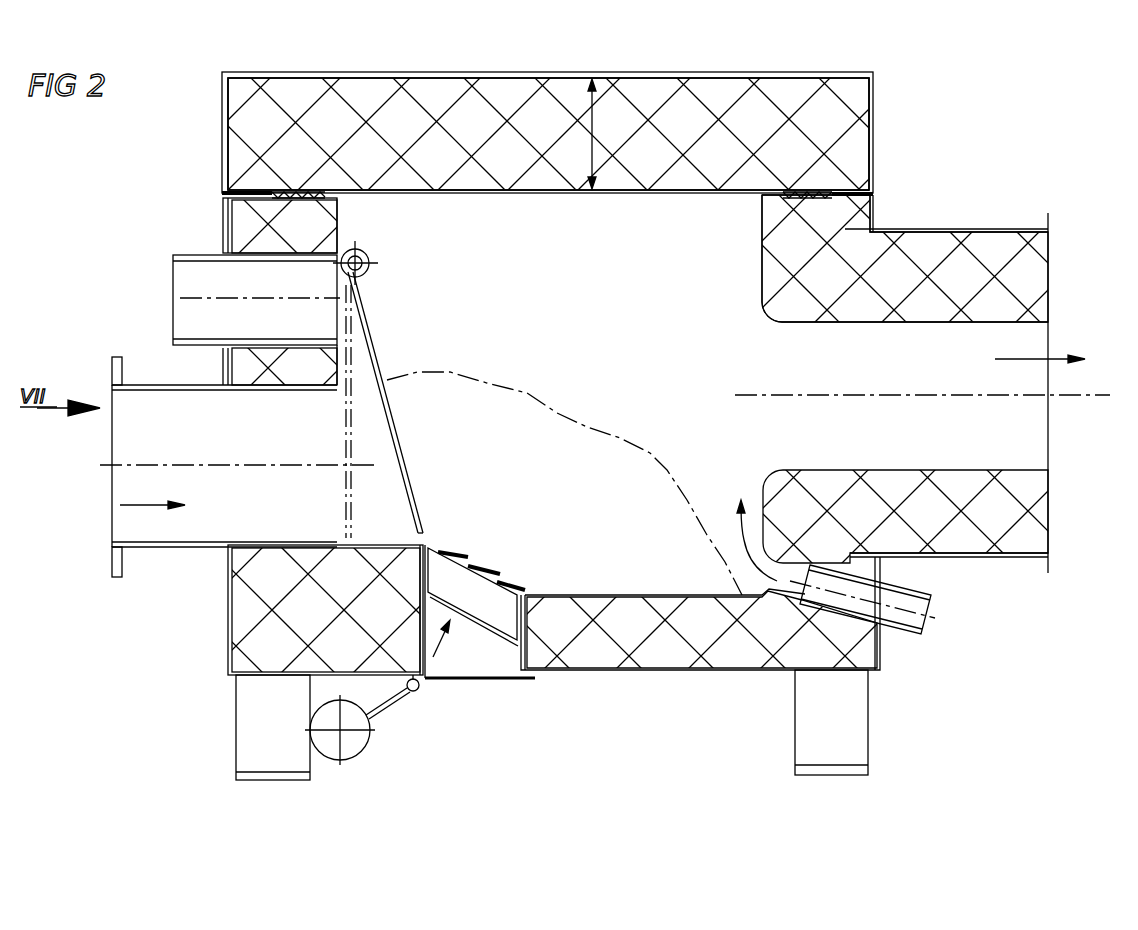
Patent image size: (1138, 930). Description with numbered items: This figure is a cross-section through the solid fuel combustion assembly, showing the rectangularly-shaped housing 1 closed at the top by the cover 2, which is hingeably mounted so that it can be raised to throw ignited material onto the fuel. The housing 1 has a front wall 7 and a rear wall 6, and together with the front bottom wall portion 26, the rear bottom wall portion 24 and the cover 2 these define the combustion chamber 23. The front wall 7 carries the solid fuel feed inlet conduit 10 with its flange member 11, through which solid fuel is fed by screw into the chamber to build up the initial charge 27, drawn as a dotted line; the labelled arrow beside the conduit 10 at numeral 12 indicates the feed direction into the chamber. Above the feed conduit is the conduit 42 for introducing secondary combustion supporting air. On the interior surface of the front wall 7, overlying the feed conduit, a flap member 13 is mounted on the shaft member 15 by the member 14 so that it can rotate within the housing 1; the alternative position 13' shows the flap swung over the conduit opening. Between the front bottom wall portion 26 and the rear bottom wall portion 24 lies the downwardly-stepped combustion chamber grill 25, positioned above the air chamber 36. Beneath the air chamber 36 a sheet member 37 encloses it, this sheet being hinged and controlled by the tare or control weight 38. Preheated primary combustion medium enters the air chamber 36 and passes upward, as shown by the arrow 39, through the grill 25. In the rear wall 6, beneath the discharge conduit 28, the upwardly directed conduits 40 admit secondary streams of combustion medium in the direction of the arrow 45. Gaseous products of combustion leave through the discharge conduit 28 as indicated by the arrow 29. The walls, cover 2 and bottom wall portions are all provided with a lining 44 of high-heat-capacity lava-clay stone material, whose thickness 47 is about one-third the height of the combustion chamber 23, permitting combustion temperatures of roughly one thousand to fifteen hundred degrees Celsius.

The housing 1 is at (880, 128).
The cover 2 is at (808, 96).
The rear wall 6 is at (863, 207).
The front wall 7 is at (226, 223).
The solid fuel feed inlet conduit 10 is at (150, 543).
The flange member 11 is at (118, 561).
The inlet duct 12 is at (140, 505).
The flap member 13 is at (402, 402).
The flap closed position 13' is at (404, 409).
The mounting member 14 is at (372, 258).
The shaft member 15 is at (355, 263).
The combustion chamber 23 is at (717, 207).
The rear bottom wall portion 24 is at (597, 595).
The combustion chamber grill 25 is at (490, 571).
The front bottom wall portion 26 is at (384, 545).
The initial charge 27 is at (610, 428).
The discharge conduit 28 is at (1007, 228).
The arrow 29 is at (930, 372).
The air chamber 36 is at (467, 660).
The sheet member 37 is at (497, 681).
The control weight 38 is at (352, 742).
The arrow 39 is at (433, 650).
The conduits 40 is at (922, 588).
The conduit 42 is at (190, 282).
The lining 44 is at (522, 102).
The arrow 45 is at (743, 542).
The thickness 47 is at (597, 142).